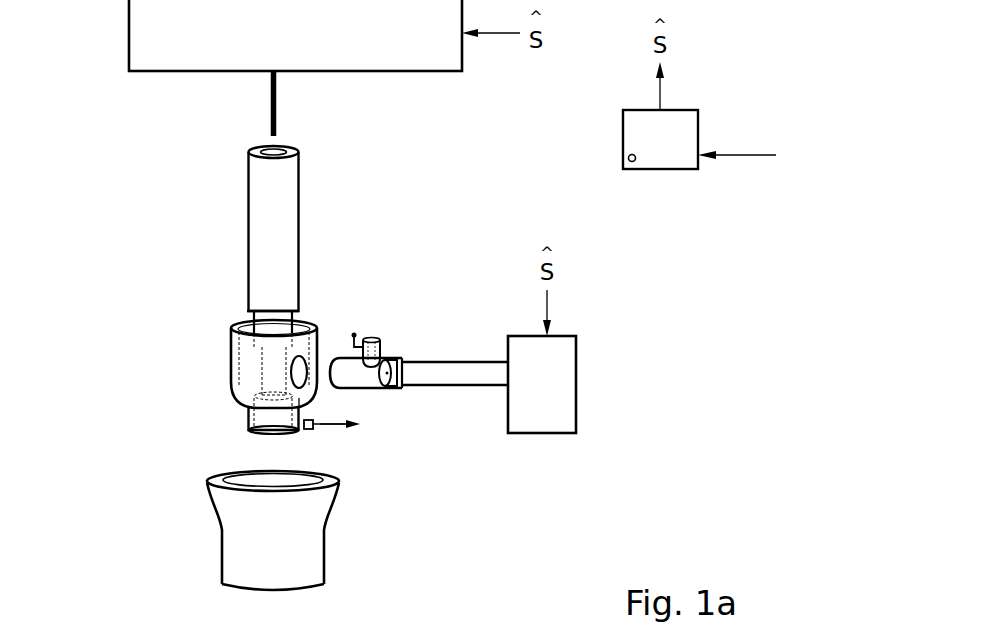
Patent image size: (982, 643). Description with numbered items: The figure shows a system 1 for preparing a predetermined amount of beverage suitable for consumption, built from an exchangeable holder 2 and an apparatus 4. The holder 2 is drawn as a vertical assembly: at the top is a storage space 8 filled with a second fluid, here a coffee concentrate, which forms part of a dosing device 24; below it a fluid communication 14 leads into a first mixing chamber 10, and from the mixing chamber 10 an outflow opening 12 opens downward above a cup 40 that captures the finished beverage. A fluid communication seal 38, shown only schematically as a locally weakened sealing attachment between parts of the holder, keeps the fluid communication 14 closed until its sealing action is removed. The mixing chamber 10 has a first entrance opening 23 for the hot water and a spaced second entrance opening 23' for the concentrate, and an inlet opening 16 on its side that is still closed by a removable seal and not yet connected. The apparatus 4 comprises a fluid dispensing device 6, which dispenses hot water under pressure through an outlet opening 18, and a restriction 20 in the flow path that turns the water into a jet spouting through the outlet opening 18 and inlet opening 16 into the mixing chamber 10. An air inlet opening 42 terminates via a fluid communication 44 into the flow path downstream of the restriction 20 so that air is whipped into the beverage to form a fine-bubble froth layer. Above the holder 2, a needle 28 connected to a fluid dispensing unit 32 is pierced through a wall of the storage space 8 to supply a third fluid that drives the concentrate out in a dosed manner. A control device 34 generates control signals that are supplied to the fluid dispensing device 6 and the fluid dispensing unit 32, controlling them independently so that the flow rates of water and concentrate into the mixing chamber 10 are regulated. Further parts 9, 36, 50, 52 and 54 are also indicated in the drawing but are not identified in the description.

The system 1 is at (519, 547).
The exchangeable holder 2 is at (246, 311).
The apparatus 4 is at (586, 179).
The fluid dispensing device 6 is at (531, 436).
The storage space 8 is at (263, 258).
The top cap 9 is at (248, 162).
The first mixing chamber 10 is at (258, 406).
The outflow opening 12 is at (265, 433).
The fluid communication 14 is at (312, 327).
The inlet opening 16 is at (268, 386).
The outlet opening 18 is at (337, 378).
The restriction 20 is at (406, 361).
The first entrance opening 23 is at (385, 428).
The second entrance opening 23' is at (186, 369).
The dosing device 24 is at (320, 143).
The needle 28 is at (269, 113).
The fluid dispensing unit 32 is at (268, 50).
The control device 34 is at (688, 132).
The sensor 36 is at (636, 162).
The fluid communication seal 38 is at (234, 324).
The cup 40 is at (305, 556).
The air inlet opening 42 is at (378, 340).
The fluid communication 44 is at (392, 357).
The handle 50 is at (356, 333).
The signal 52 is at (332, 428).
The sensor element 54 is at (311, 431).